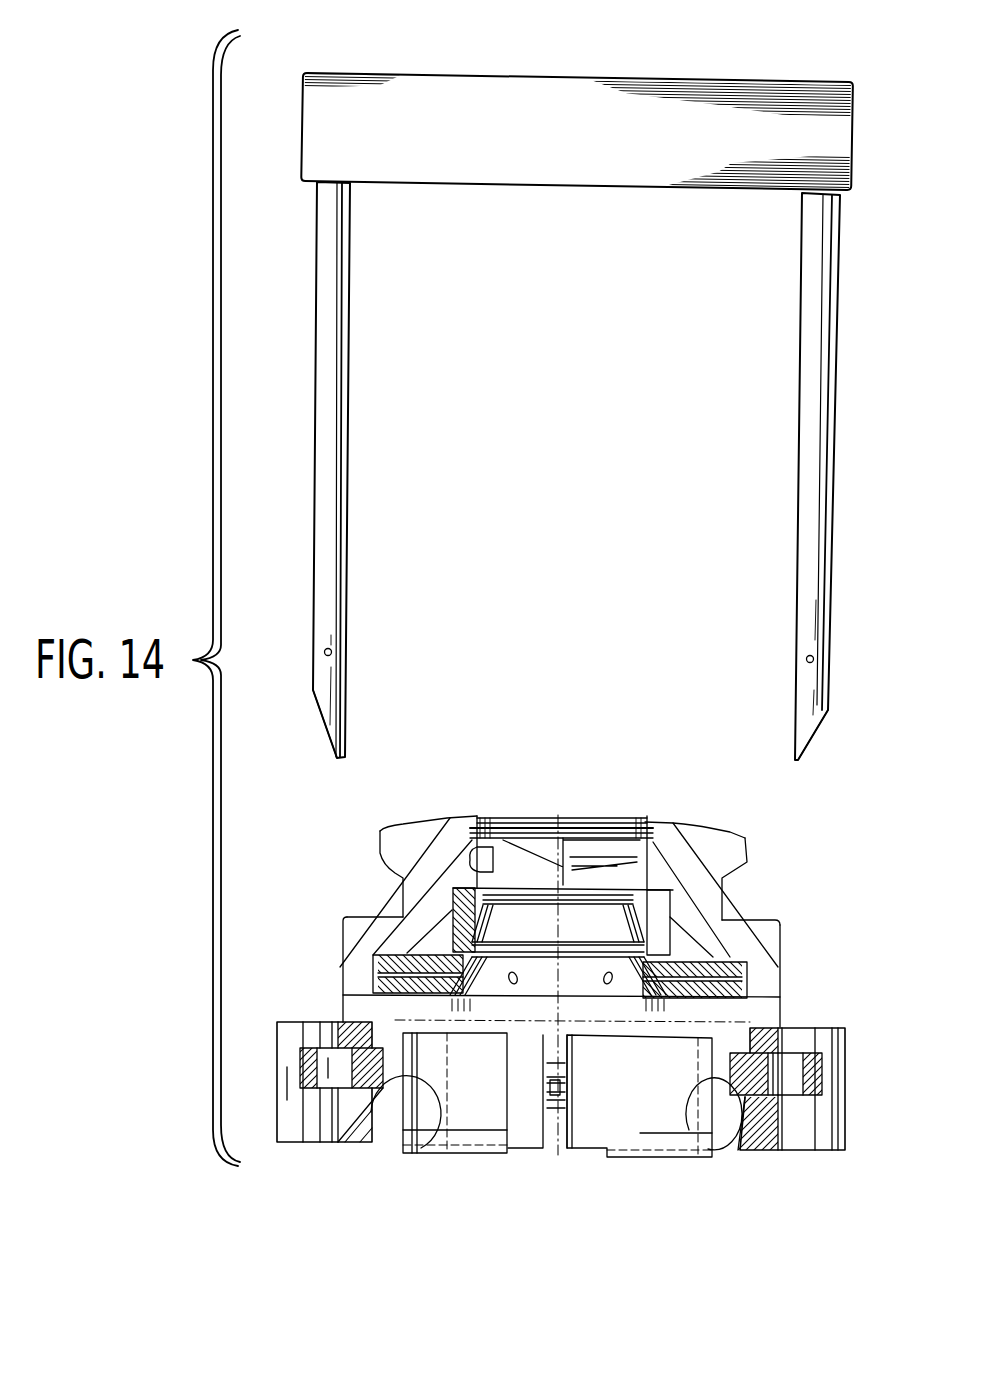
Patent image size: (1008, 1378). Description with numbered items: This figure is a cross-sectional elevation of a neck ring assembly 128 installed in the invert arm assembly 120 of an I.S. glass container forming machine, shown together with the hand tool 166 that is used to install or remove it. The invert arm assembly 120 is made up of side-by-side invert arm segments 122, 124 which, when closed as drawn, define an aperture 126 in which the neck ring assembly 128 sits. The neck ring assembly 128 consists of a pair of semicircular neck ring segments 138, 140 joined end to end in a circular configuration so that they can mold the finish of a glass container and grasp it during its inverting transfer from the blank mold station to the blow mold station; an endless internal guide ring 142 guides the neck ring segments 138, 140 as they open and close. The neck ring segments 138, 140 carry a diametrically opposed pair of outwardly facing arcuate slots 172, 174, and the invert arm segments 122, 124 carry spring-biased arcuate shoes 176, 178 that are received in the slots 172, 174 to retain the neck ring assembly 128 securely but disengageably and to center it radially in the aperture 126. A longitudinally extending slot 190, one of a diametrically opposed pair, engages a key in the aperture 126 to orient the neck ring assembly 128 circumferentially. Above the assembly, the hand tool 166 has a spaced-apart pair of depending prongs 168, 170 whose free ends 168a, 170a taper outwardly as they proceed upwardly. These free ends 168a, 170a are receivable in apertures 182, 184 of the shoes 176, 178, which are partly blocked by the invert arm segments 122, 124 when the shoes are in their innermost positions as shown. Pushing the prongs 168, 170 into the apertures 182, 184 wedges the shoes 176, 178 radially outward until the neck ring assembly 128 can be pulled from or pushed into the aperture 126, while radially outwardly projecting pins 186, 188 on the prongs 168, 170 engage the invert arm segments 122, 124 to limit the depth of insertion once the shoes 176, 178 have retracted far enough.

The hand tool 166 is at (577, 73).
The depending prong 168 is at (355, 408).
The depending prong 170 is at (797, 432).
The radially outwardly projecting pin 186 is at (333, 650).
The radially outwardly projecting pin 188 is at (810, 655).
The free end 168a is at (322, 718).
The free end 170a is at (844, 752).
The invert arm assembly 120 is at (845, 982).
The neck ring segment 138 is at (432, 828).
The neck ring segment 140 is at (690, 826).
The neck ring assembly 128 is at (750, 923).
The internal guide ring 142 is at (713, 957).
The arcuate slot 172 is at (423, 1150).
The longitudinally extending slot 190 is at (508, 1120).
The invert arm segment 122 is at (294, 1022).
The invert arm segment 124 is at (837, 1025).
The aperture 182 is at (325, 1043).
The aperture 184 is at (800, 1052).
The aperture 126 is at (372, 1103).
The arcuate shoe 176 is at (340, 1143).
The arcuate slot 174 is at (698, 1152).
The arcuate shoe 178 is at (760, 1150).